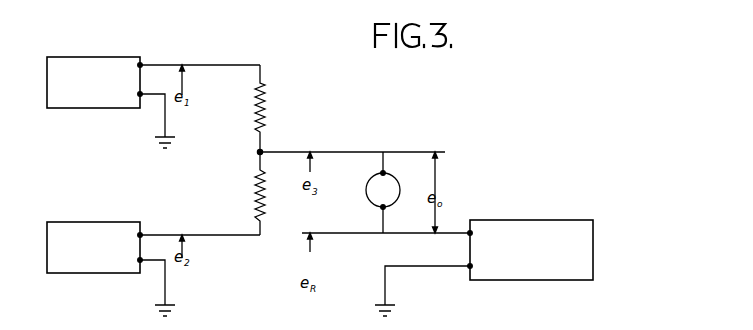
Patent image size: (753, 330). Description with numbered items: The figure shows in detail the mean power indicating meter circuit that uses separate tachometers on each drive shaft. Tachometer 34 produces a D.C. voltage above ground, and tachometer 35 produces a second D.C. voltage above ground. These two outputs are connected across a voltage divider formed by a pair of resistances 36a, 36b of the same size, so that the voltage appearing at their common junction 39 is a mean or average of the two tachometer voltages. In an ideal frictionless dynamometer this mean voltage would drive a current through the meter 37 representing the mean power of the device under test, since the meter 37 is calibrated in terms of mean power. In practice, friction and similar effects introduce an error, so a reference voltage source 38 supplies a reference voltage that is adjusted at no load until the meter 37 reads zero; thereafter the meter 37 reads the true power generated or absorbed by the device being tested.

The tachometer 34 is at (104, 91).
The tachometer 35 is at (104, 255).
The resistance 36a is at (263, 121).
The resistance 36b is at (257, 199).
The meter 37 is at (368, 200).
The reference voltage source 38 is at (540, 257).
The junction node 39 is at (258, 152).